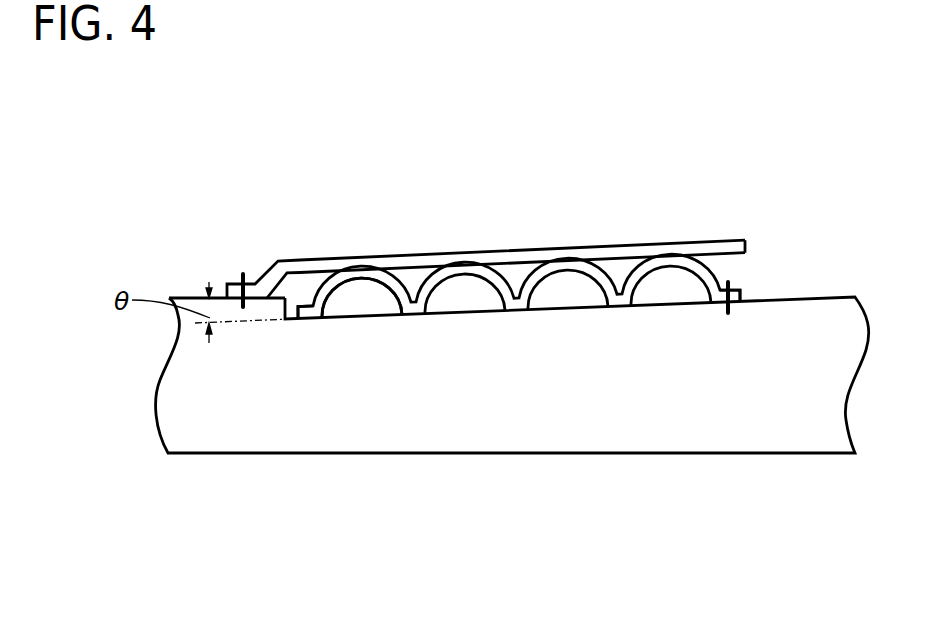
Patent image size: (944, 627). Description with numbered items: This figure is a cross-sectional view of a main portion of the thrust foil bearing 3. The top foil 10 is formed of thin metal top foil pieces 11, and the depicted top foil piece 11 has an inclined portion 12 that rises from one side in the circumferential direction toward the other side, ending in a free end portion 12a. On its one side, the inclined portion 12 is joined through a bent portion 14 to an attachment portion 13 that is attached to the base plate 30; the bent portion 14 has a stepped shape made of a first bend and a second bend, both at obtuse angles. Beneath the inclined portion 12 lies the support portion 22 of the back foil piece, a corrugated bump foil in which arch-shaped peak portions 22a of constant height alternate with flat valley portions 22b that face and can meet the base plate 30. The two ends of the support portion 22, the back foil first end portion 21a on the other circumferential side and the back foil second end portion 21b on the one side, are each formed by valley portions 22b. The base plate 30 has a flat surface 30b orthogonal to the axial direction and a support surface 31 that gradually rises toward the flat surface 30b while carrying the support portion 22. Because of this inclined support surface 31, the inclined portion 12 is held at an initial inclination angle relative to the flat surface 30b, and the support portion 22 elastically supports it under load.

The thrust foil bearing 3 is at (342, 193).
The top foil 10 is at (553, 248).
The top foil piece 11 is at (495, 215).
The inclined portion 12 is at (454, 253).
The end portion on the other side in the circumferential direction 12a is at (747, 240).
The attachment portion 13 is at (237, 284).
The bent portion 14 is at (268, 283).
The back foil first end portion 21a is at (736, 289).
The back foil second end portion 21b is at (308, 305).
The support portion 22 is at (521, 414).
The peak portion 22a is at (456, 266).
The valley portion 22b is at (518, 296).
The base plate 30 is at (484, 371).
The flat surface 30b is at (191, 297).
The support surface 31 is at (379, 313).